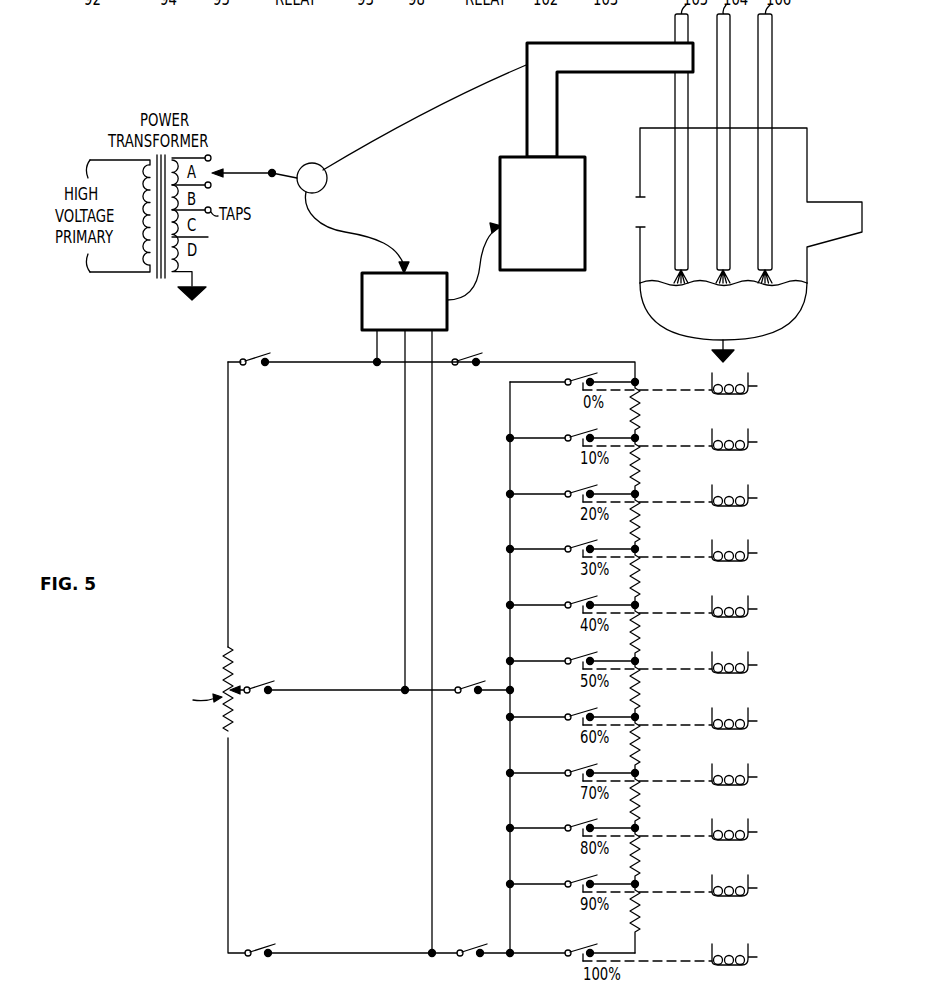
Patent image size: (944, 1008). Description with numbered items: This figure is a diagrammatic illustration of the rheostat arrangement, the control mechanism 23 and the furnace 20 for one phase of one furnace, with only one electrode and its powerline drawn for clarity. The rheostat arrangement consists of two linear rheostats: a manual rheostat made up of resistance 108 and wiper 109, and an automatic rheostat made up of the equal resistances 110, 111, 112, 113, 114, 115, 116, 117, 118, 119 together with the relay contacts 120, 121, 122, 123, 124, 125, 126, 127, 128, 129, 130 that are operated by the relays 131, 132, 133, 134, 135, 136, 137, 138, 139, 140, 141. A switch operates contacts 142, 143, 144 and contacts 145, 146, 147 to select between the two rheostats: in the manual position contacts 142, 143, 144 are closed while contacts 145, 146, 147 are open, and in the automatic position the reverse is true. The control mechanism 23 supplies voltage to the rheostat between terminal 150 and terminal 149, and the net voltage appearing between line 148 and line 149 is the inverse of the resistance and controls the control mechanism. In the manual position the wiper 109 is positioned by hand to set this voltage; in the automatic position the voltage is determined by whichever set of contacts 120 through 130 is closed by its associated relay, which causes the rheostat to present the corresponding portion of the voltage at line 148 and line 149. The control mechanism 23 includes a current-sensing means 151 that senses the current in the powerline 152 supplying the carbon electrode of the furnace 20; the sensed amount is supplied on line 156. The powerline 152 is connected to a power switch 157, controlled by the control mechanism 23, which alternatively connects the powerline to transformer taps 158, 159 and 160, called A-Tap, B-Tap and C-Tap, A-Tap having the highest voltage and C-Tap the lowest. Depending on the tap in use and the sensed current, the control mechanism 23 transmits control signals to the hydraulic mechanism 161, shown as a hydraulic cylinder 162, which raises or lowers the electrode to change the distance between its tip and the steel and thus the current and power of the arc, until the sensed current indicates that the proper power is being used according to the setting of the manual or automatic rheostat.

The furnace 20 is at (807, 150).
The control mechanism 23 is at (362, 298).
The resistance 108 is at (226, 662).
The wiper 109 is at (242, 684).
The resistance 110 is at (640, 411).
The resistance 111 is at (640, 467).
The resistance 112 is at (640, 523).
The resistance 113 is at (640, 578).
The resistance 114 is at (640, 634).
The resistance 115 is at (640, 690).
The resistance 116 is at (640, 746).
The resistance 117 is at (640, 802).
The resistance 118 is at (640, 857).
The resistance 119 is at (640, 921).
The relay contacts 120 is at (570, 378).
The relay contacts 121 is at (582, 432).
The relay contacts 122 is at (582, 488).
The relay contacts 123 is at (582, 543).
The relay contacts 124 is at (582, 599).
The relay contacts 125 is at (582, 655).
The relay contacts 126 is at (582, 711).
The relay contacts 127 is at (582, 767).
The relay contacts 128 is at (582, 822).
The relay contacts 129 is at (582, 878).
The relay contacts 130 is at (582, 948).
The relay 131 is at (733, 396).
The relay 132 is at (733, 452).
The relay 133 is at (733, 508).
The relay 134 is at (733, 563).
The relay 135 is at (733, 619).
The relay 136 is at (733, 675).
The relay 137 is at (733, 731).
The relay 138 is at (733, 787).
The relay 139 is at (733, 842).
The relay 140 is at (733, 898).
The relay 141 is at (733, 967).
The contact 142 is at (262, 356).
The contact 143 is at (263, 683).
The contact 144 is at (255, 948).
The contact 145 is at (460, 357).
The contact 146 is at (473, 684).
The contact 147 is at (464, 948).
The line 148 is at (405, 450).
The terminal 149 is at (377, 345).
The terminal 150 is at (432, 418).
The current-sensing means 151 is at (316, 165).
The powerline 152 is at (401, 133).
The line 156 is at (335, 229).
The power switch 157 is at (260, 168).
The transformer tap 158 is at (211, 156).
The transformer tap 159 is at (211, 187).
The transformer tap 160 is at (208, 238).
The hydraulic mechanism 161 is at (479, 255).
The hydraulic cylinder 162 is at (500, 181).